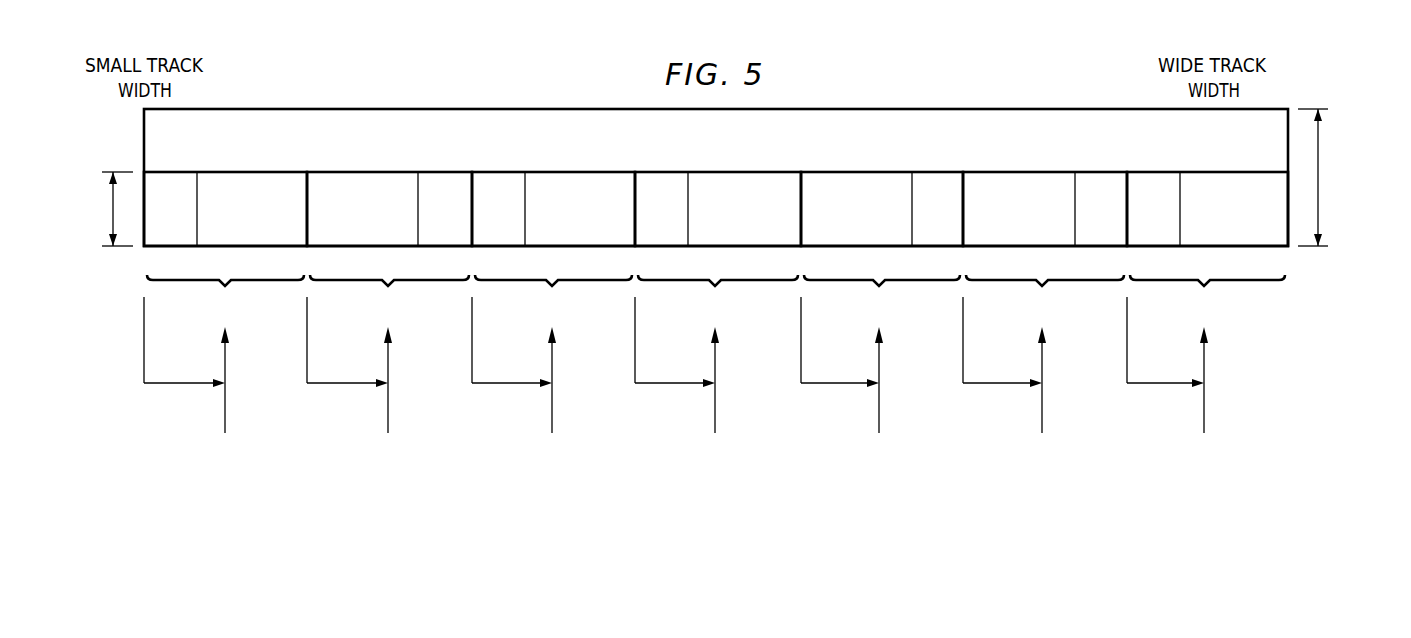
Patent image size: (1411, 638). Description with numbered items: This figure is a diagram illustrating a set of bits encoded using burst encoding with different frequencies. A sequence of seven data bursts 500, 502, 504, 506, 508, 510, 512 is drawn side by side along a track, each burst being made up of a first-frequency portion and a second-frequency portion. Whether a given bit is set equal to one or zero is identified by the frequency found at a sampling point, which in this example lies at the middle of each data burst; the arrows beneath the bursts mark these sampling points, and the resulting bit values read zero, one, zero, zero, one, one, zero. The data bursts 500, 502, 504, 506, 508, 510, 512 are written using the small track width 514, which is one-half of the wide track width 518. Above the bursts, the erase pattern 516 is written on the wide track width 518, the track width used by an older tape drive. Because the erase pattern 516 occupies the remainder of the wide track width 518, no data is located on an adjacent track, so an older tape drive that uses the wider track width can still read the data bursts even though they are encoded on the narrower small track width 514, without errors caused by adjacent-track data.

The data burst 500 is at (225, 322).
The data burst 502 is at (389, 322).
The data burst 504 is at (553, 322).
The data burst 506 is at (718, 322).
The data burst 508 is at (882, 322).
The data burst 510 is at (1045, 322).
The data burst 512 is at (1207, 322).
The small track width 514 is at (113, 205).
The erase pattern 516 is at (697, 153).
The wide track width 518 is at (1318, 172).